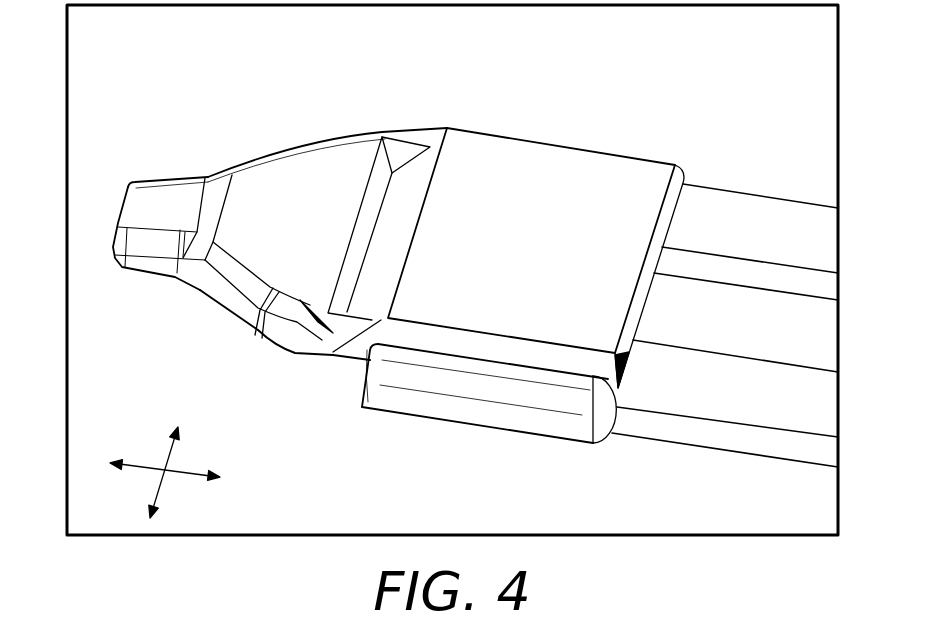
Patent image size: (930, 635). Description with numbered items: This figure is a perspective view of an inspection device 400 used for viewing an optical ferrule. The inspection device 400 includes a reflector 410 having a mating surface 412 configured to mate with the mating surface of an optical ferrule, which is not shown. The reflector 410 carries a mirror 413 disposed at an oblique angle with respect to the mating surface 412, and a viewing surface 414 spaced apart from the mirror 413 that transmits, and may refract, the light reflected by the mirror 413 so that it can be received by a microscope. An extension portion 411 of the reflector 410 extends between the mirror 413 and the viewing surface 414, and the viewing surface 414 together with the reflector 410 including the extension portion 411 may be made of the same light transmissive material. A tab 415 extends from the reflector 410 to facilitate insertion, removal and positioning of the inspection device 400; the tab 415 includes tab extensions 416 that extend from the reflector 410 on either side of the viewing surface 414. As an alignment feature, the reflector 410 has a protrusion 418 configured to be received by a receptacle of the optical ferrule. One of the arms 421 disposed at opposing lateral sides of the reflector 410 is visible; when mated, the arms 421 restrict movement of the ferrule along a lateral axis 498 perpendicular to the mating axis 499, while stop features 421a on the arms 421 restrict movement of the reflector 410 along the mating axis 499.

The inspection device 400 is at (716, 75).
The reflector 410 is at (440, 93).
The extension portion 411 is at (568, 170).
The mating surface 412 is at (280, 350).
The mirror 413 is at (393, 235).
The viewing surface 414 is at (640, 308).
The tab 415 is at (777, 160).
The tab extensions 416 is at (722, 205).
The protrusion 418 is at (143, 205).
The arms 421 is at (450, 407).
The stop features 421a is at (362, 387).
The lateral axis 498 is at (162, 487).
The mating axis 499 is at (147, 465).